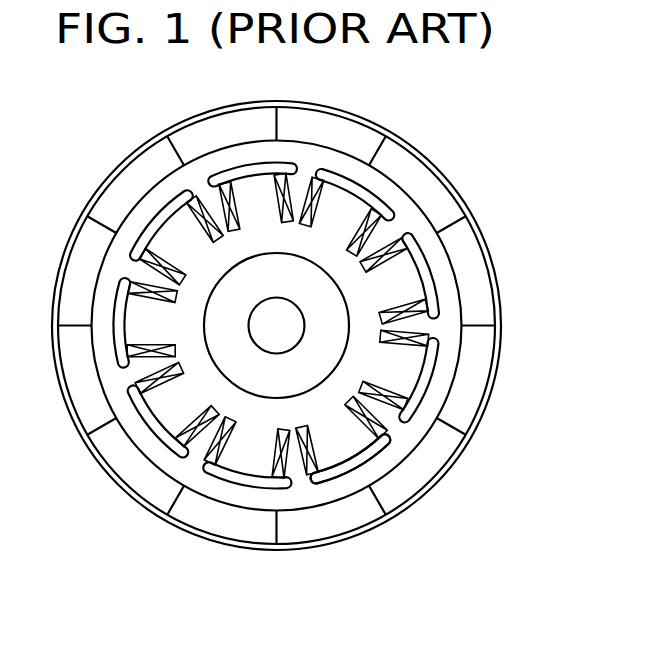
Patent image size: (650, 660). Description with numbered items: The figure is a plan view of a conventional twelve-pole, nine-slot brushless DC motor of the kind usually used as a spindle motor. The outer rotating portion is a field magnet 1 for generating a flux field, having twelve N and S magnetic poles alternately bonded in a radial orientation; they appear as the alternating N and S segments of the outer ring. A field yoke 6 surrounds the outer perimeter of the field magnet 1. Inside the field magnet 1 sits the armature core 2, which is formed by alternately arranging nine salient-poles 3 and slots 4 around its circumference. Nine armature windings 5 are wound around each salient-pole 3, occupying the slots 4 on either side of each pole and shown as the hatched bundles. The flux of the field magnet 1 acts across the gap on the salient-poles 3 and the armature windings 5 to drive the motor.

The field magnet 1 is at (465, 248).
The armature core 2 is at (453, 354).
The salient-pole 3 is at (437, 380).
The slot 4 is at (390, 422).
The armature winding 5 is at (359, 433).
The field yoke 6 is at (423, 155).